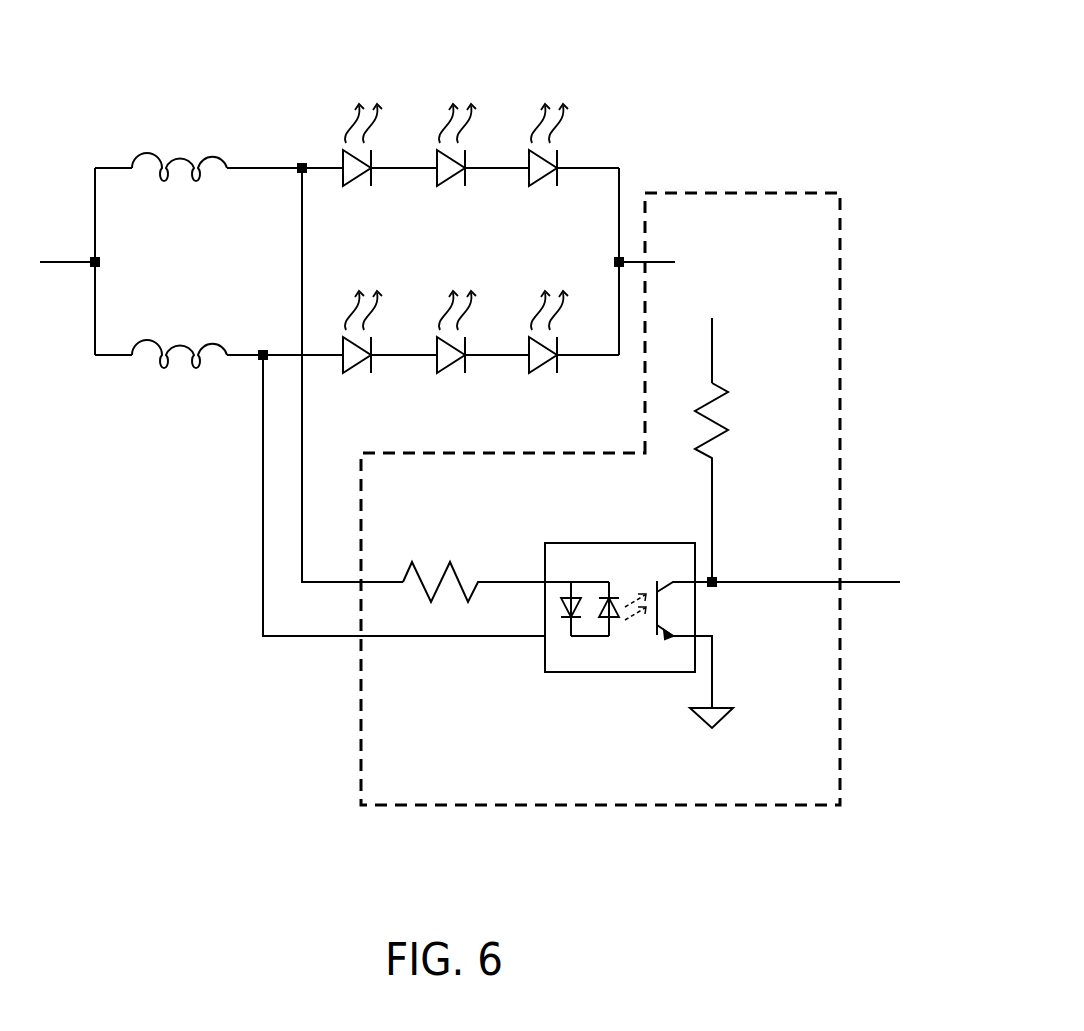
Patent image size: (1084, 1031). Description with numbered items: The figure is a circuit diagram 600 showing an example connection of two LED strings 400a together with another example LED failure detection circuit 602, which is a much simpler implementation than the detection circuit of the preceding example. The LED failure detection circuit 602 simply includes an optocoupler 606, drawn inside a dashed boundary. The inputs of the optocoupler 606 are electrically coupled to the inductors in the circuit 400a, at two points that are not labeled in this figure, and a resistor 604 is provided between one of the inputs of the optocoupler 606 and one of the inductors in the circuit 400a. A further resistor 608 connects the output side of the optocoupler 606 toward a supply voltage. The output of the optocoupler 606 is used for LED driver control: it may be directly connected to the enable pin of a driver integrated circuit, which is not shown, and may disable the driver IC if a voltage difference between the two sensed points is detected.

The circuit diagram 600 is at (890, 73).
The connection of two LED strings 400a is at (297, 140).
The LED failure detection circuit 602 is at (840, 362).
The resistor 604 is at (457, 575).
The optocoupler 606 is at (618, 672).
The resistor R2 608 is at (716, 383).